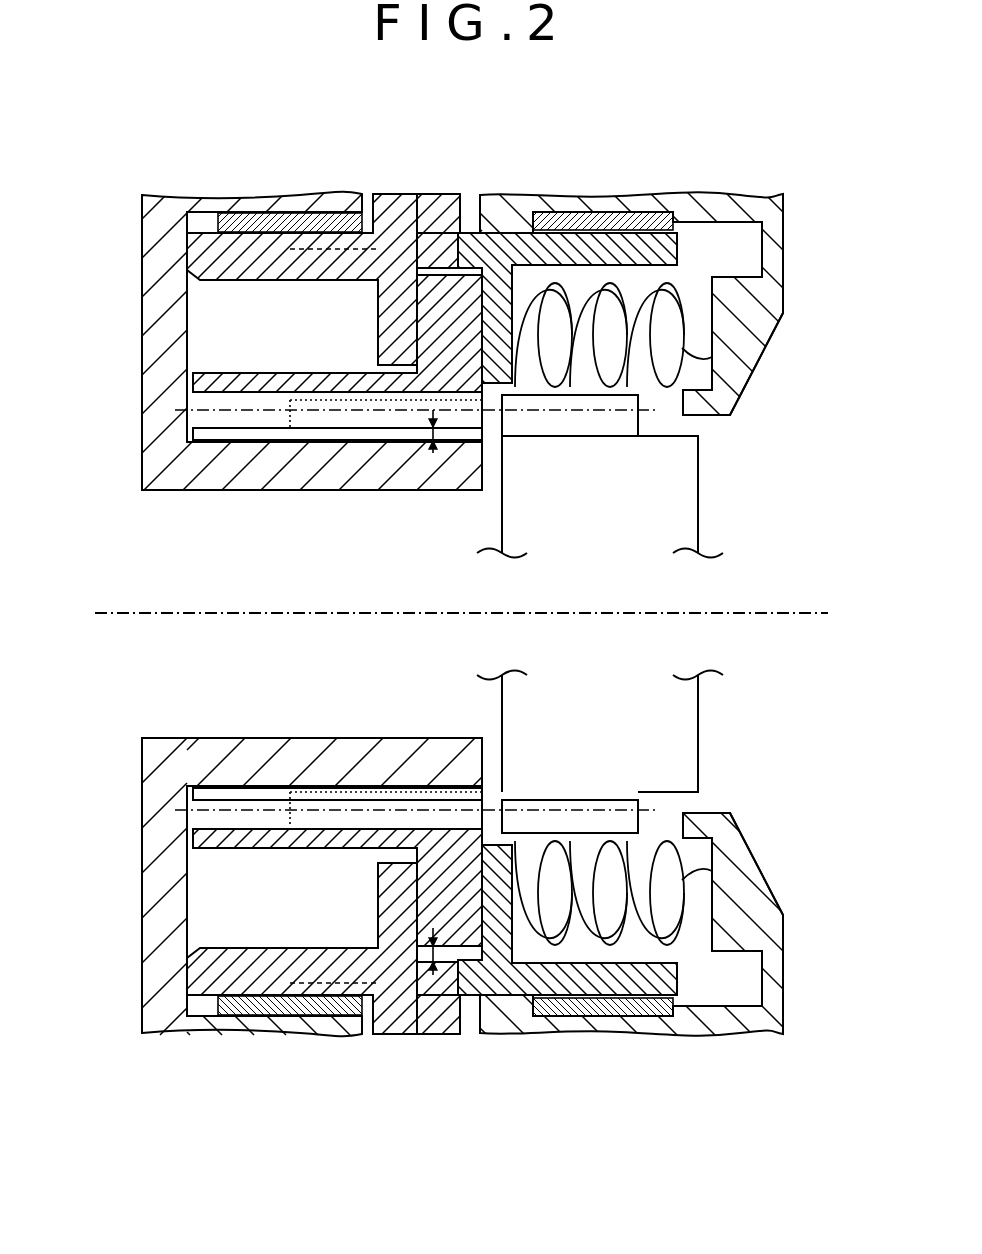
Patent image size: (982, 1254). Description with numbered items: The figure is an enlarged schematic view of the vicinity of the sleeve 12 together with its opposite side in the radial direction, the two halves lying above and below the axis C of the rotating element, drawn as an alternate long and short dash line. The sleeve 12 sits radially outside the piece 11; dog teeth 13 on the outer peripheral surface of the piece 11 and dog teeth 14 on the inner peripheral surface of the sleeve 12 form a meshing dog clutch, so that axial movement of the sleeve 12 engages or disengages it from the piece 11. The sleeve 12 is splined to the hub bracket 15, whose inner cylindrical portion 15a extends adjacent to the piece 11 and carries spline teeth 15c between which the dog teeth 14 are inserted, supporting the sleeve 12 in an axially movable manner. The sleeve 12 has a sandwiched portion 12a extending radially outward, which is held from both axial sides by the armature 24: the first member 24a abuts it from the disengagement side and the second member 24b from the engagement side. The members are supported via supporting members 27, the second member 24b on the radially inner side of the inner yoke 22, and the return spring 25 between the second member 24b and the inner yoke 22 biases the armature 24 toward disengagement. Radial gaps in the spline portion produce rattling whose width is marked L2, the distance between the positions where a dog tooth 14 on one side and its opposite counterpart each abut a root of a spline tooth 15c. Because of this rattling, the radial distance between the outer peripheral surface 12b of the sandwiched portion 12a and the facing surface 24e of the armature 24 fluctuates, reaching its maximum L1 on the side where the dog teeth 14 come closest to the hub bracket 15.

The piece 11 is at (705, 520).
The sleeve 12 is at (265, 372).
The sandwiched portion 12a is at (460, 330).
The outer peripheral surface 12b is at (455, 228).
The dog teeth 13 is at (560, 438).
The dog teeth 14 is at (258, 432).
The hub bracket 15 is at (158, 372).
The inner cylindrical portion 15a is at (372, 470).
The spline teeth 15c is at (478, 441).
The inner yoke 22 is at (760, 300).
The armature 24 is at (338, 282).
The first member 24a is at (188, 264).
The second member 24b is at (677, 262).
The facing surface 24e is at (440, 262).
The return spring 25 is at (676, 356).
The supporting member 27 is at (218, 222).
The axis C is at (800, 618).
The maximum radial distance L1 is at (433, 930).
The width of radial rattling L2 is at (433, 455).